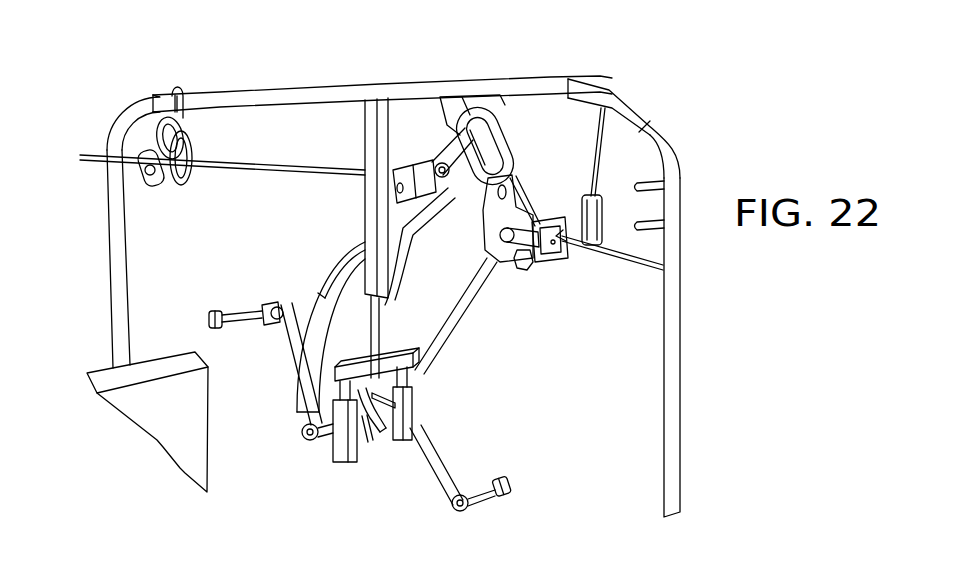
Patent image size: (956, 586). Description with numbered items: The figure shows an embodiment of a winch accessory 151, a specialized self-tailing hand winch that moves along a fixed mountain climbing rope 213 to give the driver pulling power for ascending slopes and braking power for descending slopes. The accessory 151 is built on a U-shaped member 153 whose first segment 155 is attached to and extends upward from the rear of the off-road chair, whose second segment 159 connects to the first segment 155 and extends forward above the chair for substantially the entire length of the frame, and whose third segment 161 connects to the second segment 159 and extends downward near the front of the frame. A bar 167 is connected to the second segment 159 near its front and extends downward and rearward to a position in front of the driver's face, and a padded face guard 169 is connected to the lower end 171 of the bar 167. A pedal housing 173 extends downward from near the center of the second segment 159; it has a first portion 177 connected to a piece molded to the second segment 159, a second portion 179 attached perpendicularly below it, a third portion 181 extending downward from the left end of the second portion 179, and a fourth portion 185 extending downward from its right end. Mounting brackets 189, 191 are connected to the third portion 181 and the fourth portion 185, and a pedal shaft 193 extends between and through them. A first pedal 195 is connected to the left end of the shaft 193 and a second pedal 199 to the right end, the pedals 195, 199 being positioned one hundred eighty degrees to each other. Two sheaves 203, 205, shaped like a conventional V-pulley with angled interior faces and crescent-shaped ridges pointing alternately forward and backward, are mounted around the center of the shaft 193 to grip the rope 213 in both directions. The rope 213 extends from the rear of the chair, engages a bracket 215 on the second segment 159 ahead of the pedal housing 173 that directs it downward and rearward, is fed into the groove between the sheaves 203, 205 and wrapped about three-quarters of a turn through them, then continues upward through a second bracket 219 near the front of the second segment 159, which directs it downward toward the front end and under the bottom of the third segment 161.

The accessory 151 is at (260, 64).
The U-shaped member 153 is at (325, 78).
The first segment 155 is at (126, 252).
The second segment 159 is at (343, 88).
The third segment 161 is at (683, 335).
The bar 167 is at (434, 100).
The padded face guard 169 is at (306, 290).
The lower end 171 is at (347, 250).
The pedal housing 173 is at (360, 118).
The first portion 177 is at (410, 270).
The second portion 179 is at (397, 347).
The third portion 181 is at (413, 377).
The fourth portion 185 is at (352, 362).
The mounting bracket 189 is at (412, 400).
The mounting bracket 191 is at (327, 440).
The pedal shaft 193 is at (391, 450).
The first pedal 195 is at (482, 498).
The second pedal 199 is at (246, 320).
The sheave 203 is at (375, 462).
The sheave 205 is at (367, 443).
The rope 213 is at (293, 178).
The bracket 215 is at (416, 175).
The second bracket 219 is at (521, 196).